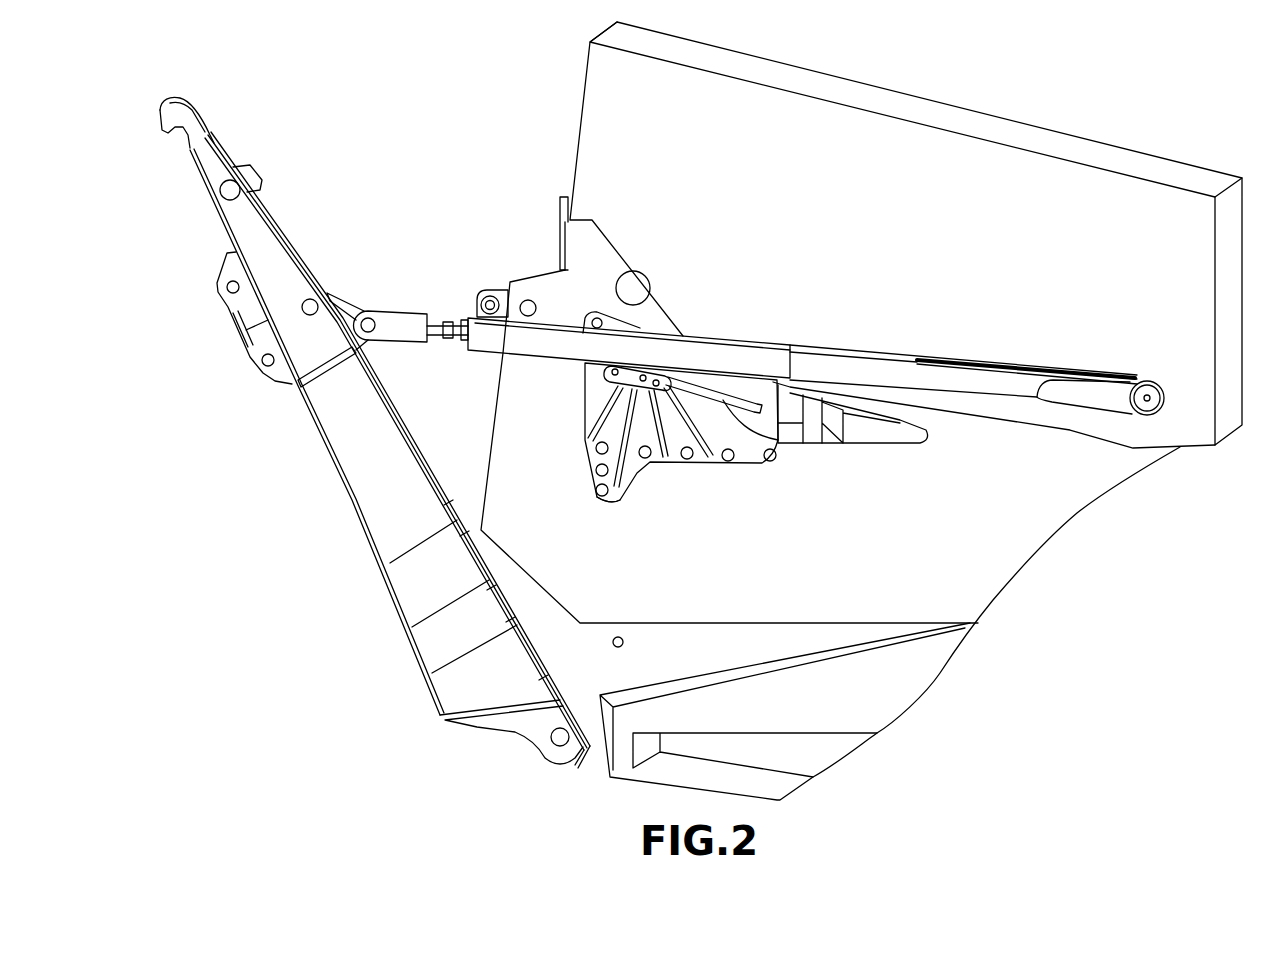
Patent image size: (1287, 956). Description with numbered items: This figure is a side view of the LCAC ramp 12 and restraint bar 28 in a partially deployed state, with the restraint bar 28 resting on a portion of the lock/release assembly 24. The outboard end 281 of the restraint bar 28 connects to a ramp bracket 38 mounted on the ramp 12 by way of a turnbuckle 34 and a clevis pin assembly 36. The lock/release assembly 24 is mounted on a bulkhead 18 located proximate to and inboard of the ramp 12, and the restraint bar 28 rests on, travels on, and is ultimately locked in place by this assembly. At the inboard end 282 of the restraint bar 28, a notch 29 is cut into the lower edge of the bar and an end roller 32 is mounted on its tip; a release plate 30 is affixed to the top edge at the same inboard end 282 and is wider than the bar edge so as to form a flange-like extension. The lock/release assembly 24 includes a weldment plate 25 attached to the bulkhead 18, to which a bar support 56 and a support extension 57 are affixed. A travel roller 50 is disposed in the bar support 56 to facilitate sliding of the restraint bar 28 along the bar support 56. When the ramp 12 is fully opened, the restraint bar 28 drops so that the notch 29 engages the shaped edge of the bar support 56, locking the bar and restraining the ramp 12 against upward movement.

The ramp 12 is at (330, 423).
The bulkhead 18 is at (830, 199).
The lock/release assembly 24 is at (737, 496).
The weldment plate 25 is at (637, 500).
The restraint bar 28 is at (793, 345).
The outboard end 281 is at (422, 358).
The inboard end 282 is at (1056, 328).
The notch 29 is at (1059, 411).
The release plate 30 is at (977, 356).
The end roller 32 is at (1167, 383).
The turnbuckle 34 is at (447, 343).
The clevis pin assembly 36 is at (387, 305).
The ramp bracket 38 is at (337, 287).
The travel roller 50 is at (653, 367).
The bar support 56 is at (605, 368).
The support extension 57 is at (777, 457).